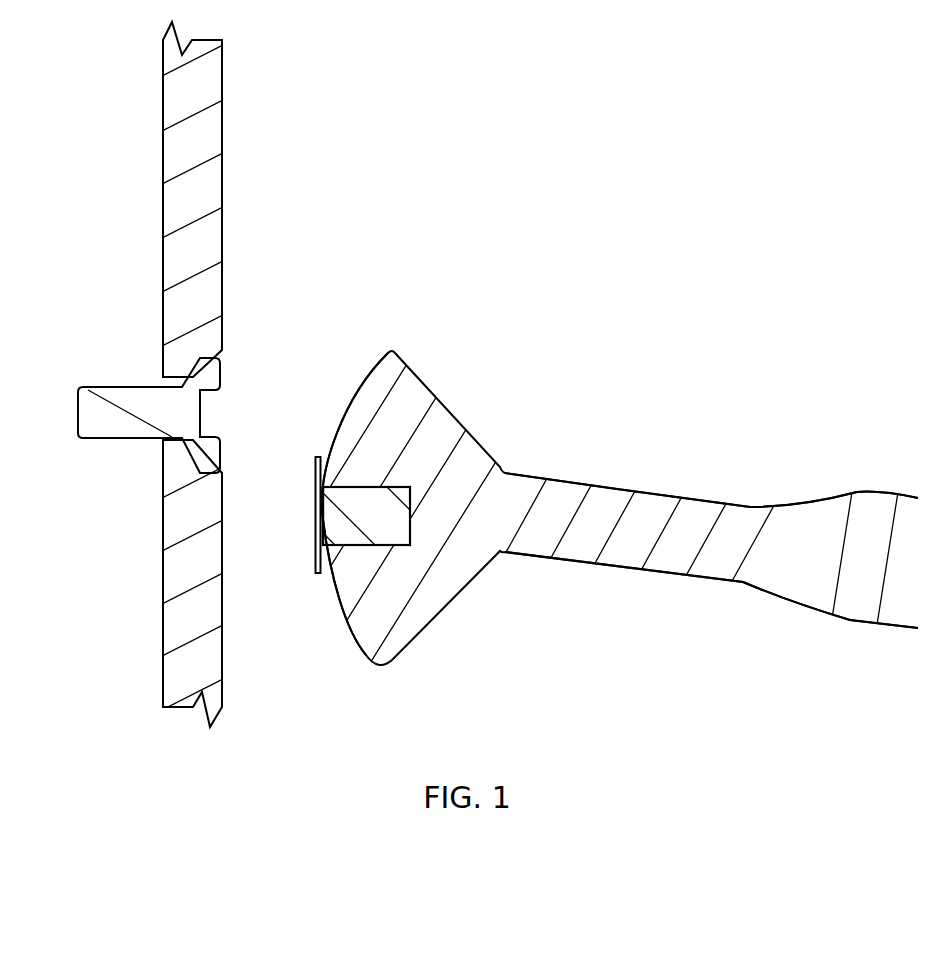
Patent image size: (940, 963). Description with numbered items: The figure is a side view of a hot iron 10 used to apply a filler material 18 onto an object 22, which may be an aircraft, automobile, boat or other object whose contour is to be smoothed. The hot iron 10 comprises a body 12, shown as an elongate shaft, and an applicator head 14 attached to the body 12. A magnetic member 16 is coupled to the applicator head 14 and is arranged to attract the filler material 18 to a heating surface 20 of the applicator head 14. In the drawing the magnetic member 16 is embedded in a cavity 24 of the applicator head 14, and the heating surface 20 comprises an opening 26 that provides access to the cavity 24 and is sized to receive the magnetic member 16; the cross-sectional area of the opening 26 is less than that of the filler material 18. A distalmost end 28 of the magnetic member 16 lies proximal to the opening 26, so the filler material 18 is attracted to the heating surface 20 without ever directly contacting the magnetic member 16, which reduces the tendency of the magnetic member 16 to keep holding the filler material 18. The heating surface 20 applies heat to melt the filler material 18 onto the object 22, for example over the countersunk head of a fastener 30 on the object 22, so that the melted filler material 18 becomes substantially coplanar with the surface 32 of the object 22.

The hot iron 10 is at (690, 257).
The body 12 is at (703, 523).
The applicator head 14 is at (390, 417).
The magnetic member 16 is at (362, 500).
The filler material 18 is at (317, 455).
The heating surface 20 is at (350, 400).
The object 22 is at (170, 205).
The cavity 24 is at (407, 545).
The opening 26 is at (322, 547).
The distalmost end 28 is at (330, 533).
The fastener 30 is at (125, 422).
The surface 32 is at (222, 613).